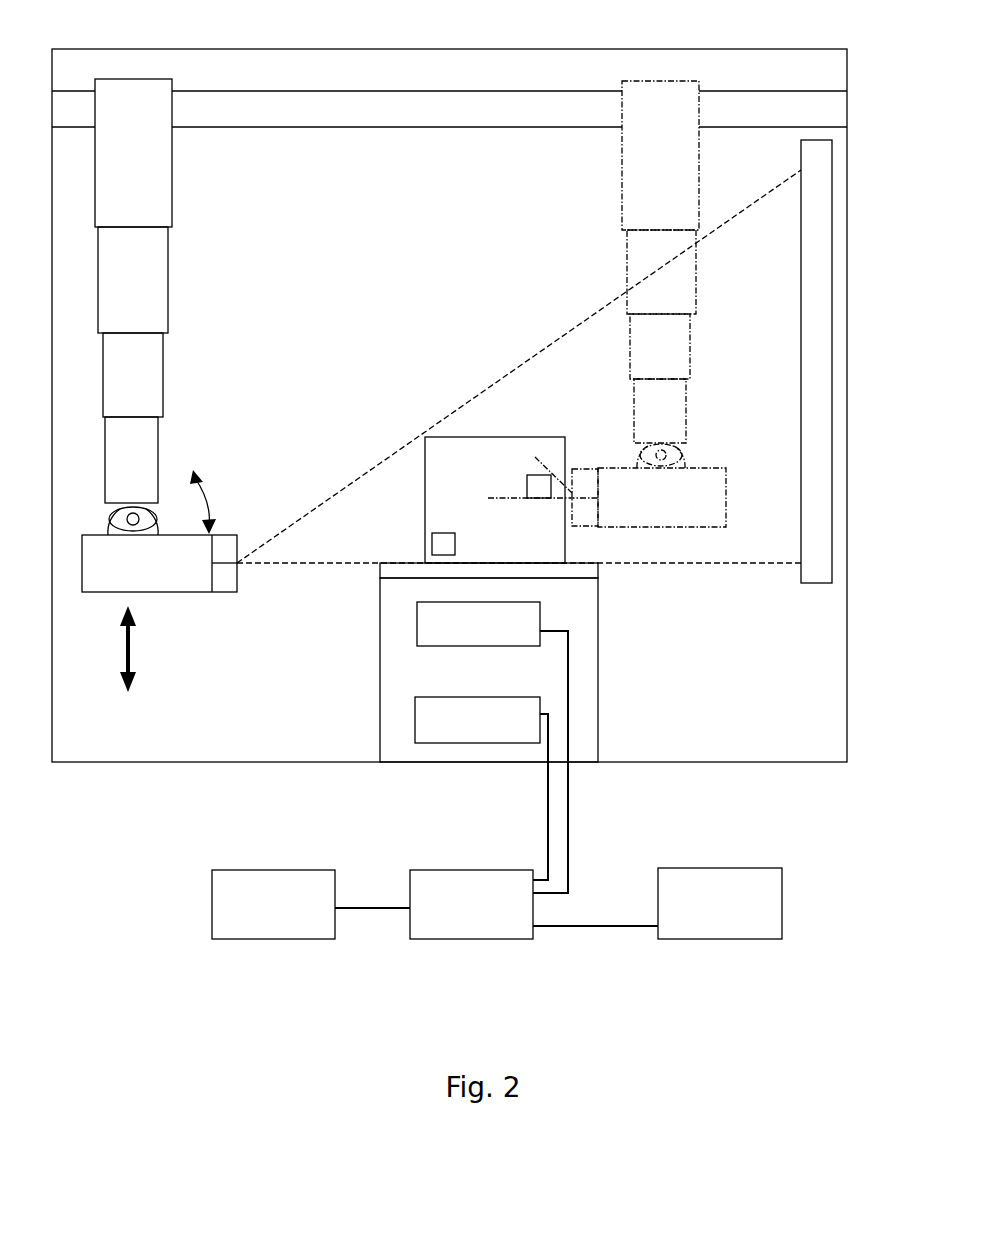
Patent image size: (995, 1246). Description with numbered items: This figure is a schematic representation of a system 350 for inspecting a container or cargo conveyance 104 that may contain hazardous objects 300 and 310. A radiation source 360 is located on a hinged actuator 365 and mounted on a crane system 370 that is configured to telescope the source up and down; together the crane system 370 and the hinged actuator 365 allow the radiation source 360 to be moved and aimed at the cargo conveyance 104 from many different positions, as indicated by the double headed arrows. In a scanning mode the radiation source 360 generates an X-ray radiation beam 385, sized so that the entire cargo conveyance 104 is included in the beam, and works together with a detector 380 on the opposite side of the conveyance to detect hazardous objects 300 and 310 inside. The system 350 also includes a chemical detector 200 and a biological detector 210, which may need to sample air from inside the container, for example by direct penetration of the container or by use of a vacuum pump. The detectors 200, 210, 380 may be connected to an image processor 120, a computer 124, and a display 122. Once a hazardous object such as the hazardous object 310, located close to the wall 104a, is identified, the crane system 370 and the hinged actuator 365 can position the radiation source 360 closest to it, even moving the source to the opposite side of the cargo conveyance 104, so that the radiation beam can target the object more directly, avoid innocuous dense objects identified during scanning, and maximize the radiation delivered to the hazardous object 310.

The system 350 is at (440, 24).
The crane system 370 is at (226, 166).
The radiation source 360 is at (170, 593).
The hinged actuator 365 is at (139, 516).
The radiation beam 385 is at (447, 415).
The cargo conveyance 104 is at (475, 437).
The wall 104a is at (565, 457).
The hazardous object 310 is at (527, 486).
The hazardous object 300 is at (455, 549).
The detector 380 is at (817, 360).
The chemical detector 200 is at (498, 647).
The biological detector 210 is at (498, 744).
The image processor 120 is at (453, 940).
The display 122 is at (250, 940).
The computer 124 is at (690, 940).